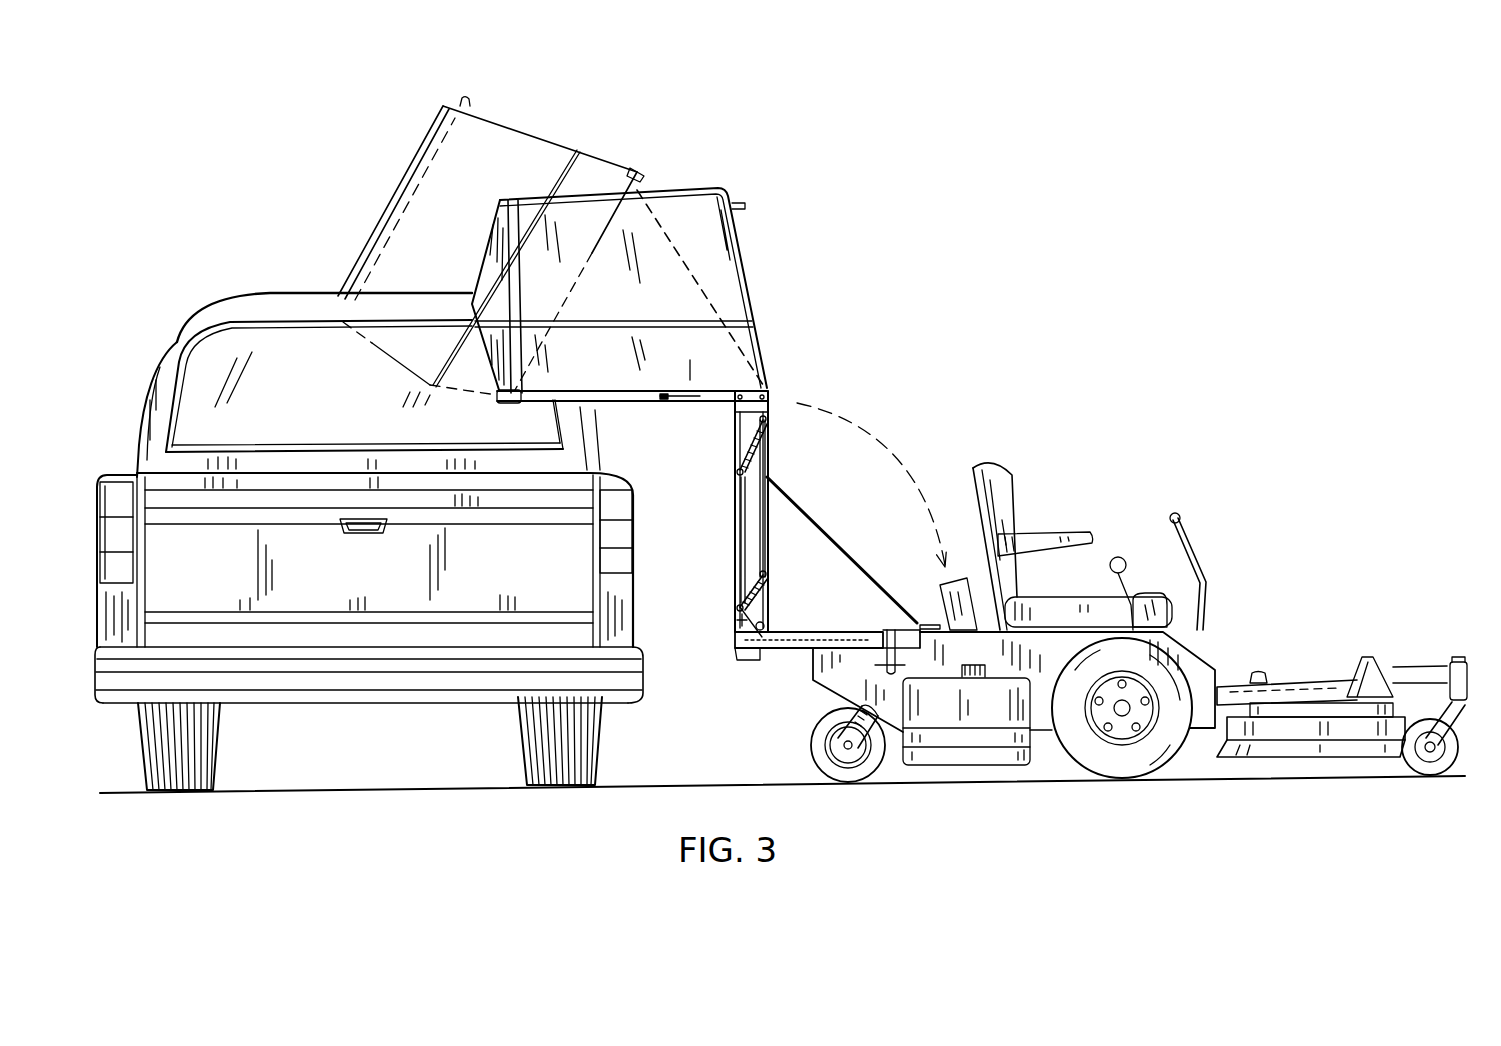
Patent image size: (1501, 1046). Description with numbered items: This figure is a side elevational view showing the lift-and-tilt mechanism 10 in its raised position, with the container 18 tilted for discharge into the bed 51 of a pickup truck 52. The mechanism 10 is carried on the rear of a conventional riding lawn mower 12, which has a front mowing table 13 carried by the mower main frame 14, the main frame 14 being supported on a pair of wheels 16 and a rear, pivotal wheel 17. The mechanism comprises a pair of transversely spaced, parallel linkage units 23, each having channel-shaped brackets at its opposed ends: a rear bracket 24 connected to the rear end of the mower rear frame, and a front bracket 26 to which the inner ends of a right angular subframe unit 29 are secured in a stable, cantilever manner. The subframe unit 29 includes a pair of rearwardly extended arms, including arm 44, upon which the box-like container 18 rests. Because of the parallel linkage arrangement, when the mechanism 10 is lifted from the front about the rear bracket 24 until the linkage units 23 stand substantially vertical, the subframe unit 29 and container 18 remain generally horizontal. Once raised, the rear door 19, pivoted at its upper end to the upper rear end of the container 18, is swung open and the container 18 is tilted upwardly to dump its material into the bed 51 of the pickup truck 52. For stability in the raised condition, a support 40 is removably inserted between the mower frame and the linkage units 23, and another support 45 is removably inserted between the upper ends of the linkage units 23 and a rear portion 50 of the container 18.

The lift-and-tilt mechanism 10 is at (716, 507).
The riding lawn mower 12 is at (1073, 505).
The mowing table 13 is at (1307, 675).
The main frame 14 is at (851, 678).
The wheels 16 is at (1168, 680).
The rear pivotal wheel 17 is at (822, 750).
The container 18 is at (493, 140).
The rear door 19 is at (493, 266).
The linkage units 23 is at (729, 573).
The rear bracket 24 is at (736, 624).
The front bracket 26 is at (765, 407).
The subframe unit 29 is at (631, 420).
The support 40 is at (838, 543).
The arm 44 is at (698, 403).
The support 45 is at (703, 287).
The rear portion 50 is at (640, 177).
The bed 51 is at (335, 456).
The pickup truck 52 is at (233, 315).